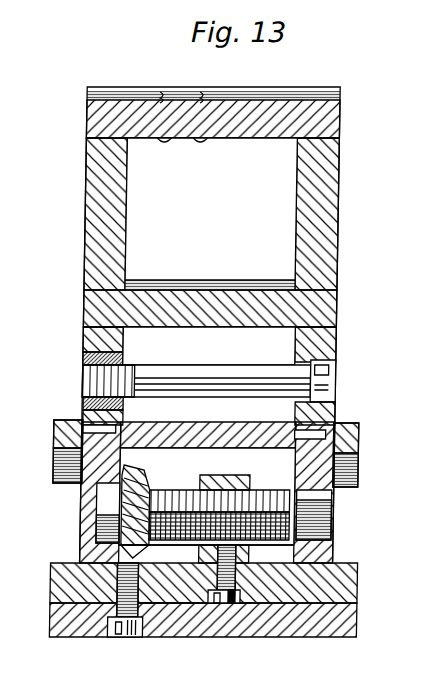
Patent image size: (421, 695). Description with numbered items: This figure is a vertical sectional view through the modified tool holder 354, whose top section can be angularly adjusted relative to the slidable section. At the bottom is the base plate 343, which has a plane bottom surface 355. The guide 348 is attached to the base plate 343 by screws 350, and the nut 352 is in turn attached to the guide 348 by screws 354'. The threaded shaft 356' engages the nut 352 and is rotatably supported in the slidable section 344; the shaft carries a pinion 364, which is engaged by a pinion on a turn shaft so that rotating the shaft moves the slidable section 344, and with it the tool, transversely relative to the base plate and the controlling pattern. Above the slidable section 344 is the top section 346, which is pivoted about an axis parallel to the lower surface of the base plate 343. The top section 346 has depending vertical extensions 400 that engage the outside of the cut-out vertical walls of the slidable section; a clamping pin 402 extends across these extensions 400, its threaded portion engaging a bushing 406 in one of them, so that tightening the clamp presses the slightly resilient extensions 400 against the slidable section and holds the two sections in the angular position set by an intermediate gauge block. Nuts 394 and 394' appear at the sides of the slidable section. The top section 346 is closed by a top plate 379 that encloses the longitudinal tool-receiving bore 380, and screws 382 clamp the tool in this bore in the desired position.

The top plate 379 is at (318, 136).
The tool-receiving bore 380 is at (232, 220).
The screws 382 is at (166, 141).
The top section 346 is at (80, 294).
The depending vertical extensions 400 is at (94, 341).
The bushing 406 is at (88, 359).
The tool holder 354 is at (209, 346).
The clamping pin 402 is at (272, 362).
The nut 394' is at (42, 446).
The nut 394 is at (369, 454).
The slidable section 344 is at (326, 488).
The nut 352 is at (264, 475).
The threaded shaft 356' is at (205, 500).
The pinion 364 is at (143, 549).
The guide 348 is at (341, 594).
The base plate 343 is at (342, 630).
The plane bottom surface 355 is at (207, 631).
The screws 350 is at (142, 632).
The screws 354' is at (247, 610).